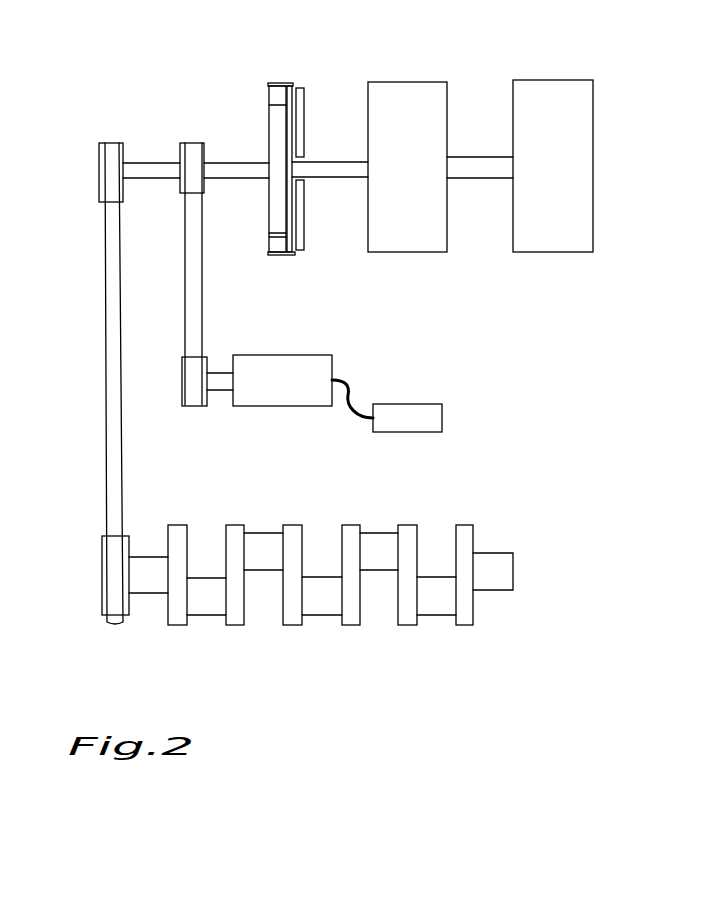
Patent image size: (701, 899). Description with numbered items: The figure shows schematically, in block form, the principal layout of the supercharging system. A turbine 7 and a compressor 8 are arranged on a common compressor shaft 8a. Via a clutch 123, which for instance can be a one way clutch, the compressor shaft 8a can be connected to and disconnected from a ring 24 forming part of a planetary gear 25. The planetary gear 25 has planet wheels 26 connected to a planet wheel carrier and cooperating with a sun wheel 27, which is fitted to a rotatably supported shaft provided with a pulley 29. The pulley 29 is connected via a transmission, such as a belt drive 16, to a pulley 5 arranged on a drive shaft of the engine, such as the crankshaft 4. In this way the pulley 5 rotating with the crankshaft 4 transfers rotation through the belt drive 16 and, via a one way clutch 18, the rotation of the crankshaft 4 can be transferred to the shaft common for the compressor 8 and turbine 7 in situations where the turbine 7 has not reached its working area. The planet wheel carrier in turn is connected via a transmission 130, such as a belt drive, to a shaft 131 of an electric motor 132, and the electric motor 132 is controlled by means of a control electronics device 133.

The crankshaft 4 is at (173, 503).
The pulley 5 is at (102, 577).
The turbine 7 is at (583, 223).
The compressor 8 is at (435, 222).
The compressor shaft 8a is at (355, 172).
The belt drive 16 is at (110, 372).
The one way clutch 18 is at (145, 170).
The ring 24 is at (283, 82).
The planetary gear 25 is at (242, 68).
The planet wheels 26 is at (268, 95).
The sun wheel 27 is at (277, 193).
The pulley 29 is at (98, 162).
The clutch 123 is at (305, 130).
The transmission 130 is at (190, 303).
The shaft 131 is at (223, 387).
The electric motor 132 is at (252, 362).
The control electronics device 133 is at (398, 412).